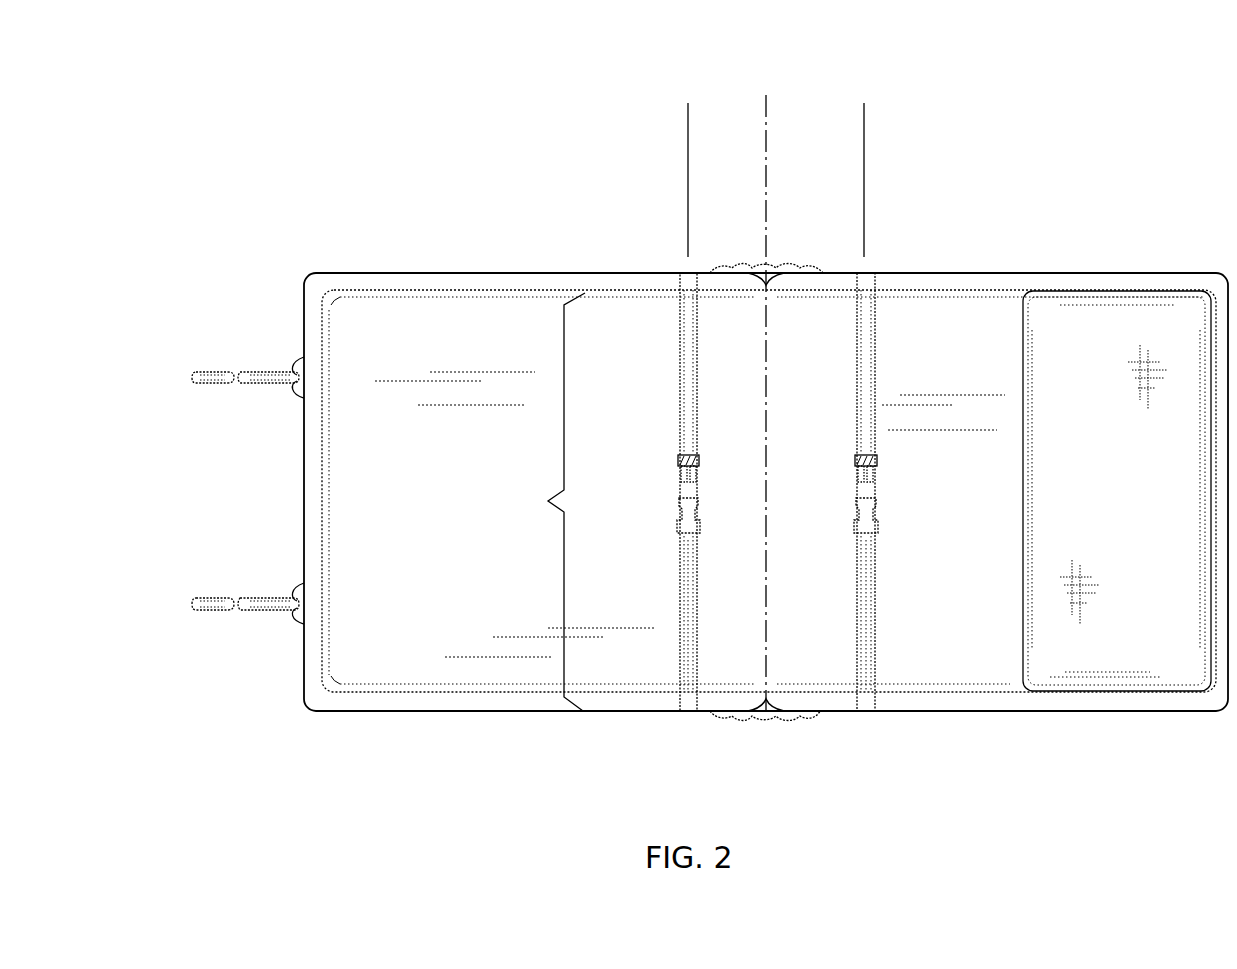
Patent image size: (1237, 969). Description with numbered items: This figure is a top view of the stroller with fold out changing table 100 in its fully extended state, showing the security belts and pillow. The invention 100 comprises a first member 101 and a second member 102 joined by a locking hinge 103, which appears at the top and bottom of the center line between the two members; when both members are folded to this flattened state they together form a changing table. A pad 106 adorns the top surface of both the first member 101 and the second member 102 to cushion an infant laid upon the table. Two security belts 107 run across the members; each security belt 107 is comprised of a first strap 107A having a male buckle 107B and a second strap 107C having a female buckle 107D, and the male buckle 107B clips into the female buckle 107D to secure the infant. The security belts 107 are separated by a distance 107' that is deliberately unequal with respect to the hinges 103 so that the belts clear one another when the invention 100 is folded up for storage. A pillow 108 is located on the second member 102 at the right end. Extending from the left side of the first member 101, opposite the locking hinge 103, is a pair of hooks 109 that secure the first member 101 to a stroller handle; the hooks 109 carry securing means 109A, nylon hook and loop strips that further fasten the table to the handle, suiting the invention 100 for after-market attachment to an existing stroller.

The stroller with fold out changing table 100 is at (1114, 184).
The first member 101 is at (550, 276).
The second member 102 is at (909, 703).
The locking hinge 103 is at (768, 266).
The pad 106 is at (476, 330).
The security belt 107 is at (540, 502).
The distance 107' is at (778, 180).
The first strap 107A is at (682, 270).
The male buckle 107B is at (680, 470).
The second strap 107C is at (683, 603).
The female buckle 107D is at (680, 503).
The pillow 108 is at (1097, 330).
The hooks 109 is at (293, 392).
The securing means 109A is at (212, 384).